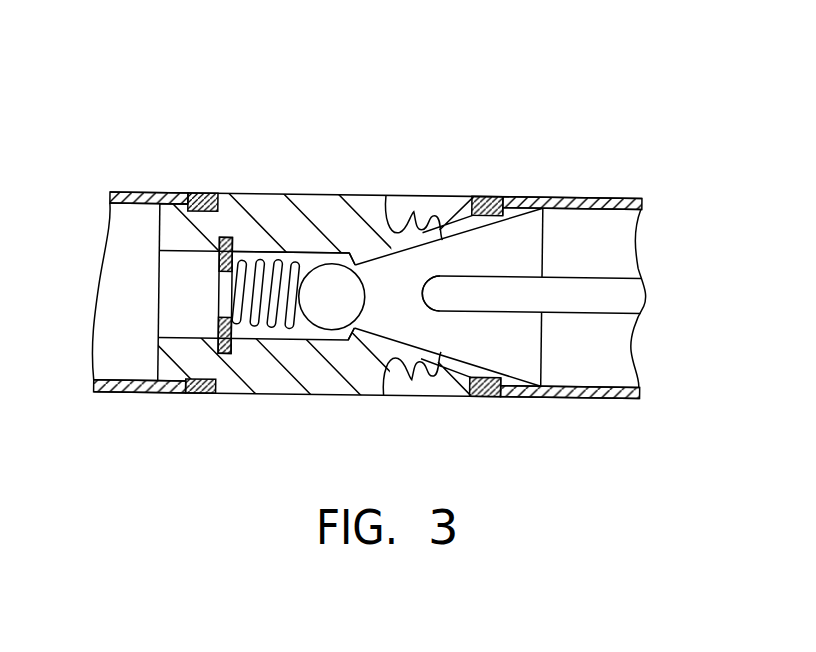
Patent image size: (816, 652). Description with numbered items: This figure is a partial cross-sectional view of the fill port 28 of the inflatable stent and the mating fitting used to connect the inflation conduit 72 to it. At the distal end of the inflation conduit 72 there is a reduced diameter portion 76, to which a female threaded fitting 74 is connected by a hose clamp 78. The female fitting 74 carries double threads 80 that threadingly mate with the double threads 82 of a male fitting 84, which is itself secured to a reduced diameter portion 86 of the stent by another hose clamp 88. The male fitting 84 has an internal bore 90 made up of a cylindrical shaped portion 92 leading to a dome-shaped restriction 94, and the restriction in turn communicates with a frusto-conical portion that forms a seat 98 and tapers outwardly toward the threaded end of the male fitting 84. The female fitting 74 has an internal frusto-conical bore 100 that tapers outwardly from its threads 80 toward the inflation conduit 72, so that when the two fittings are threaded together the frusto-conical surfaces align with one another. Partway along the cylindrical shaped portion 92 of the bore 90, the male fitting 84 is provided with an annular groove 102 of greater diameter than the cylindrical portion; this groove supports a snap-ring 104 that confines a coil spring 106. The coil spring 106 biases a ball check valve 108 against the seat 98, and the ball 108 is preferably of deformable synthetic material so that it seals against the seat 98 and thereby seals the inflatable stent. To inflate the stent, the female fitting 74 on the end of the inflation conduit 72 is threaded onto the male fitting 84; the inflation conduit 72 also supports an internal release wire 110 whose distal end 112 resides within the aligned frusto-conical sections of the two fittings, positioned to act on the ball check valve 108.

The fill port 28 is at (221, 62).
The inflation conduit 72 is at (617, 202).
The threaded fitting 74 is at (466, 192).
The reduced diameter portion 76 is at (536, 228).
The hose clamp 78 is at (514, 196).
The double threads 80 is at (411, 198).
The double threads 82 is at (394, 200).
The male fitting 84 is at (313, 210).
The reduced diameter portion 86 is at (188, 208).
The hose clamp 88 is at (190, 192).
The internal bore 90 is at (198, 285).
The cylindrical shaped portion 92 is at (172, 340).
The dome-shaped restriction 94 is at (380, 323).
The seat 98 is at (367, 293).
The internal frusto-conical bore 100 is at (508, 360).
The annular groove 102 is at (228, 362).
The snap-ring 104 is at (230, 236).
The coil spring 106 is at (278, 335).
The ball check valve 108 is at (335, 293).
The internal release wire 110 is at (610, 297).
The distal end 112 is at (498, 295).